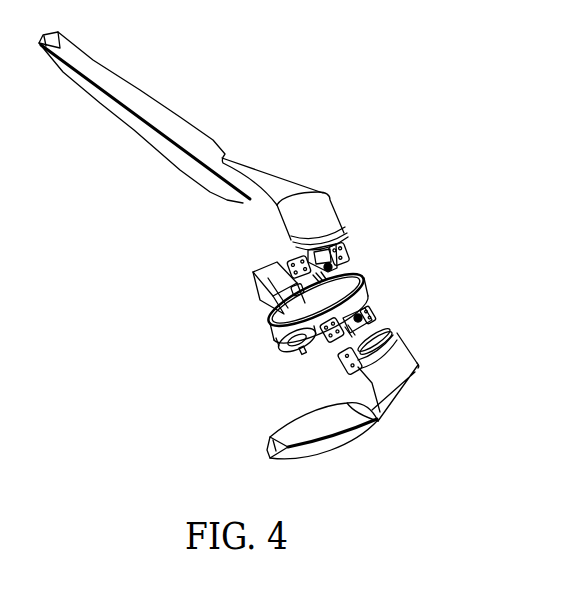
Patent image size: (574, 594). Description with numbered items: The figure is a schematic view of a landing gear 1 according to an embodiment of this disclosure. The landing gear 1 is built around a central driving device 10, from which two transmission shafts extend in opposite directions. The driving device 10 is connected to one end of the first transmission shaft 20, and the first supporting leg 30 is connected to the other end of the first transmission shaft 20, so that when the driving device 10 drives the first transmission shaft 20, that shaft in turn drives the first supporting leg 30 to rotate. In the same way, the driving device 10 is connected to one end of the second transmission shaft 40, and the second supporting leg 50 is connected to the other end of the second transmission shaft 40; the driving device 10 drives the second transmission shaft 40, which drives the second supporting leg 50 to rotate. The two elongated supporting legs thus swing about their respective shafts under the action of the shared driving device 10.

The landing gear 1 is at (247, 38).
The driving device 10 is at (258, 286).
The first transmission shaft 20 is at (293, 245).
The first supporting leg 30 is at (133, 132).
The second transmission shaft 40 is at (375, 322).
The second supporting leg 50 is at (419, 362).